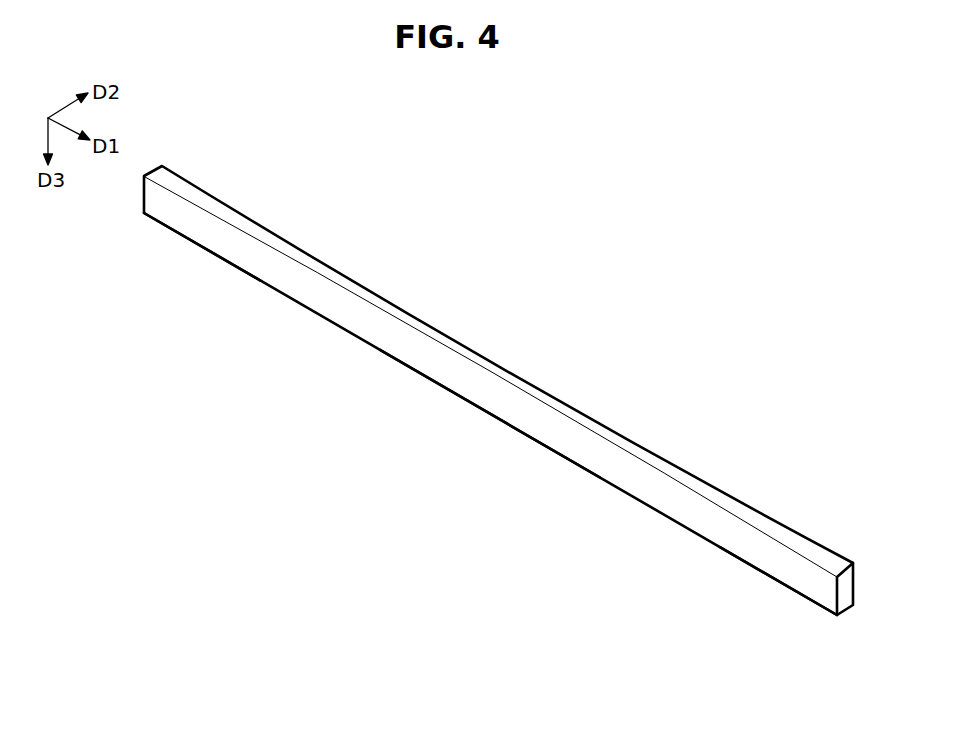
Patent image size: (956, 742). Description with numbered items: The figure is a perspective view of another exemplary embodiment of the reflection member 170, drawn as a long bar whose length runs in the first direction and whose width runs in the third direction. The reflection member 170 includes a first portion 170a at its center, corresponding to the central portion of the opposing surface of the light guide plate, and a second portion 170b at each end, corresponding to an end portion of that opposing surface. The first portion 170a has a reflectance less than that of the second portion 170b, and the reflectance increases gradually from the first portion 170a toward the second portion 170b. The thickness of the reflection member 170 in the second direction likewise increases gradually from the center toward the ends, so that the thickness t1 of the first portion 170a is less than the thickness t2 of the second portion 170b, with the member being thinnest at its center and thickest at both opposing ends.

The reflection member 170 is at (706, 336).
The first portion 170a is at (472, 414).
The second portion 170b is at (160, 235).
The thickness of the first portion t1 is at (472, 381).
The thickness of the second portion t2 is at (152, 195).